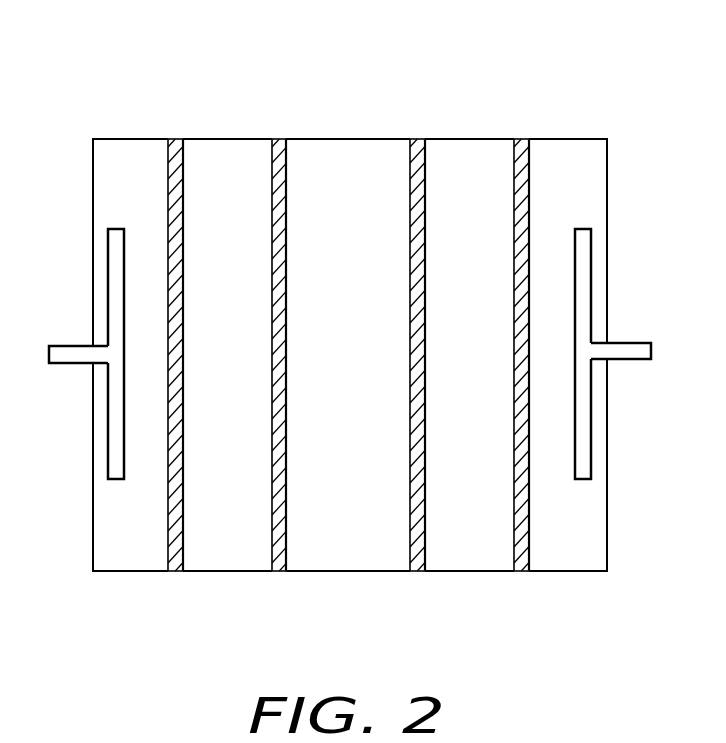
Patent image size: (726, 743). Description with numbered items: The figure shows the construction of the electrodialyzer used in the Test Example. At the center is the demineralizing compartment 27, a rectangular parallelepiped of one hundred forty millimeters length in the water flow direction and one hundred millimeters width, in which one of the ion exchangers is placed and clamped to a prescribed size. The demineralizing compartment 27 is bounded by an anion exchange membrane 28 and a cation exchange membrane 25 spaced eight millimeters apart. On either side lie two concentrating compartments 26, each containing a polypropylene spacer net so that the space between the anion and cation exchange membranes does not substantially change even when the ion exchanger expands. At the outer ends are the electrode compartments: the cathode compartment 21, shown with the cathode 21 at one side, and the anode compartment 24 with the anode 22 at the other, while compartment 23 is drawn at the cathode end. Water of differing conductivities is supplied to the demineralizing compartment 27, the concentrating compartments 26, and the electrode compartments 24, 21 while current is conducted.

The cathode 21 is at (108, 288).
The anode 22 is at (591, 288).
The first end compartment 23 is at (136, 558).
The anode compartment 24 is at (568, 558).
The cation exchange membrane 25 is at (280, 139).
The concentrating compartment 26 is at (231, 558).
The demineralizing compartment 27 is at (357, 558).
The anion exchange membrane 28 is at (177, 139).